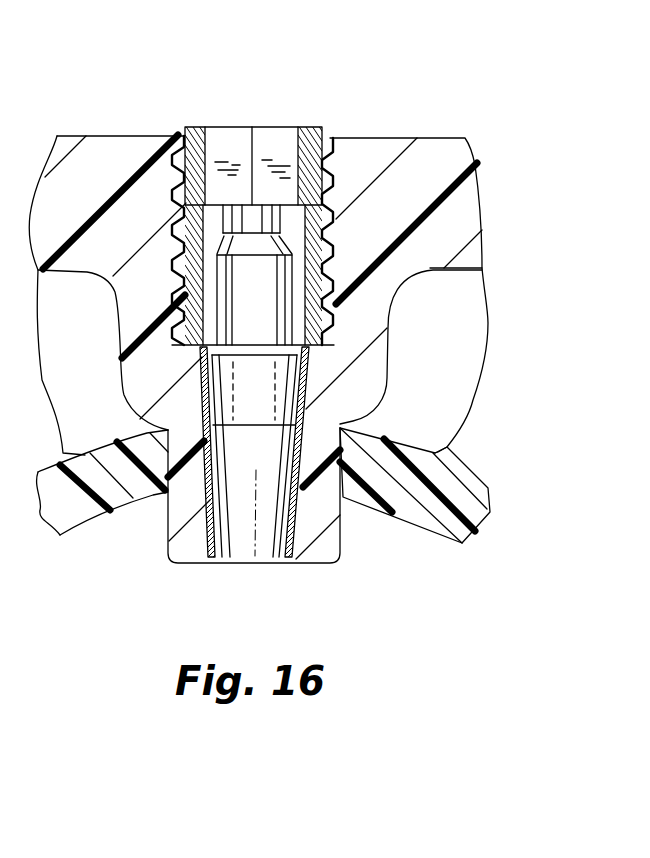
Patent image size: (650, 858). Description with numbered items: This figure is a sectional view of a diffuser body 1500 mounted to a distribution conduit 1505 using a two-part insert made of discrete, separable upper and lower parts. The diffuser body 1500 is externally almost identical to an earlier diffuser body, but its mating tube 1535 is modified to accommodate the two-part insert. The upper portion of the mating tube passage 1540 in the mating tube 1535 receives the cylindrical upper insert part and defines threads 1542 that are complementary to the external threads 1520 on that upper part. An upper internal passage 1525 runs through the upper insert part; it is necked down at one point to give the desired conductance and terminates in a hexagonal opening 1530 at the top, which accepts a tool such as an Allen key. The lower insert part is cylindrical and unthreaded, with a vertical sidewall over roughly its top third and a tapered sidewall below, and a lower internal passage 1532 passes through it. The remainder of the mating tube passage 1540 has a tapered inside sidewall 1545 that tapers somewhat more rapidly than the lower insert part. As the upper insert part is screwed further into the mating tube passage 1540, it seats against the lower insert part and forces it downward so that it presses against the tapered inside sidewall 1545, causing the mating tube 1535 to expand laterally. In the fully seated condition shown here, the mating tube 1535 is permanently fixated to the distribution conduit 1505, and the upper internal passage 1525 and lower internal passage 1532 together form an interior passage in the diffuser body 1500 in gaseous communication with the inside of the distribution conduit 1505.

The diffuser body 1500 is at (353, 88).
The distribution conduit 1505 is at (455, 455).
The external threads 1520 is at (173, 142).
The upper internal passage 1525 is at (265, 304).
The hexagonal opening 1530 is at (288, 137).
The lower internal passage 1532 is at (254, 548).
The mating tube 1535 is at (400, 362).
The mating tube passage 1540 is at (202, 395).
The threads 1542 is at (338, 216).
The tapered inside sidewall 1545 is at (278, 533).